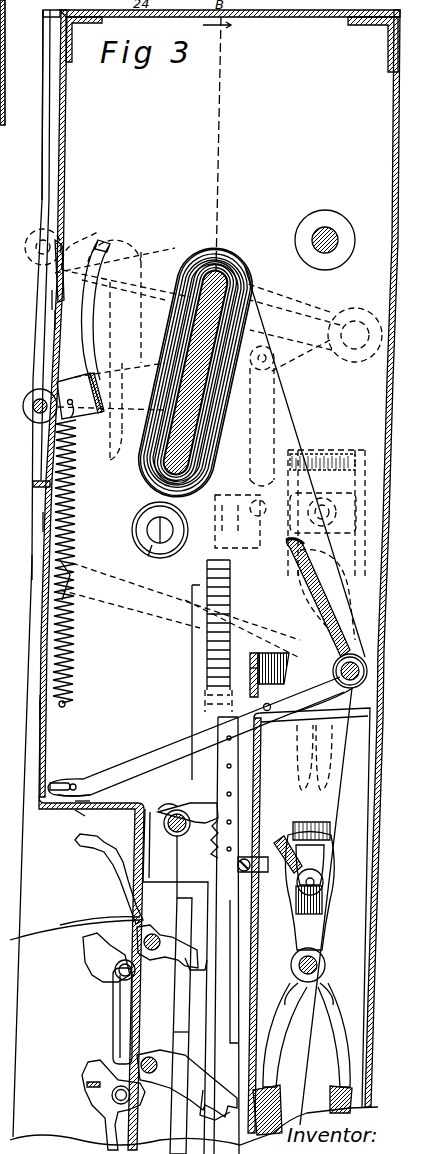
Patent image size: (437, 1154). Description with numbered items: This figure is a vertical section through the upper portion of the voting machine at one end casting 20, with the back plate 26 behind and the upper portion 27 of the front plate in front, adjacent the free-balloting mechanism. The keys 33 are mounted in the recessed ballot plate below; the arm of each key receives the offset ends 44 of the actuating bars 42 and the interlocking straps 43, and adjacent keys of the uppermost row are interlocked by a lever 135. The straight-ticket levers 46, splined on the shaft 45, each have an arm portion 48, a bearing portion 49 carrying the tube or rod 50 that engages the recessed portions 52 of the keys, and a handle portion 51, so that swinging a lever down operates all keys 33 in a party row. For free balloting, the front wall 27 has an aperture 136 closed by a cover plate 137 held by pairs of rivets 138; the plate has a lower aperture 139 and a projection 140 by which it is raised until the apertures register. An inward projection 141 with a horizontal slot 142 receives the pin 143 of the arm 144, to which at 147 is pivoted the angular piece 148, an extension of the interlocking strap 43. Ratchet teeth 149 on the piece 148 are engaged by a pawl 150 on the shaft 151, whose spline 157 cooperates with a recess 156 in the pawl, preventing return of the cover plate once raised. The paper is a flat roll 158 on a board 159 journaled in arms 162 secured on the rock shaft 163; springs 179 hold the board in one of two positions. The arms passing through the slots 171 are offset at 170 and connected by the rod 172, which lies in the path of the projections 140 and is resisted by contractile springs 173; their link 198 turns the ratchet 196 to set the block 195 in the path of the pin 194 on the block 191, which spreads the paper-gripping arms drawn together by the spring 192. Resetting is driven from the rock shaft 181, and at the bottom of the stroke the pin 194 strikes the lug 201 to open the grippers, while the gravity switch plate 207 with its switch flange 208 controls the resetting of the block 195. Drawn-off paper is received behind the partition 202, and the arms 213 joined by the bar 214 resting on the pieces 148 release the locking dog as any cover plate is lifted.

The back plate 26 is at (391, 412).
The upper portion of front plate 27 is at (60, 153).
The elongated rectangular aperture 136 is at (52, 298).
The cover plate 137 is at (55, 314).
The rivets 138 is at (68, 252).
The aperture of cover plate 139 is at (39, 707).
The projection 140 is at (35, 485).
The inward projection 141 is at (52, 778).
The horizontal slot 142 is at (78, 784).
The pin 143 is at (83, 803).
The arm 144 is at (165, 750).
The pivot 147 is at (263, 706).
The angular piece 148 is at (223, 753).
The ratchet teeth 149 is at (212, 823).
The pawl 150 is at (178, 812).
The shaft 151 is at (165, 822).
The recess 156 is at (172, 810).
The spline 157 is at (218, 818).
The flat roll of paper 158 is at (215, 245).
The board 159 is at (226, 278).
The arms 162 is at (148, 504).
The rock shaft 163 is at (150, 556).
The offset 170 is at (92, 379).
The slots 171 is at (104, 240).
The rod 172 is at (40, 409).
The contractile springs 173 is at (75, 600).
The springs 179 is at (95, 583).
The rock shaft 181 is at (330, 233).
The block 191 is at (352, 494).
The contractile spring 192 is at (337, 457).
The pin 194 is at (289, 843).
The rectangular elongated block 195 is at (356, 654).
The ratchet 196 is at (330, 623).
The link 198 is at (290, 412).
The lug 201 is at (292, 964).
The partition 202 is at (259, 793).
The gravity switch plate 207 is at (16, 567).
The switch flange 208 is at (43, 521).
The arms 213 is at (266, 655).
The bar 214 is at (250, 668).
The end casting 20 is at (90, 726).
The keys 33 is at (120, 887).
The actuating bars 42 is at (181, 1026).
The interlocking straps 43 is at (222, 862).
The offset 44 is at (192, 1103).
The shaft 45 is at (153, 933).
The straight-ticket levers 46 is at (110, 1028).
The arm portion 48 is at (70, 938).
The bearing portion 49 is at (80, 813).
The tube or rod 50 is at (123, 966).
The handle portion 51 is at (92, 948).
The recessed portions 52 is at (100, 860).
The lever 135 is at (143, 993).